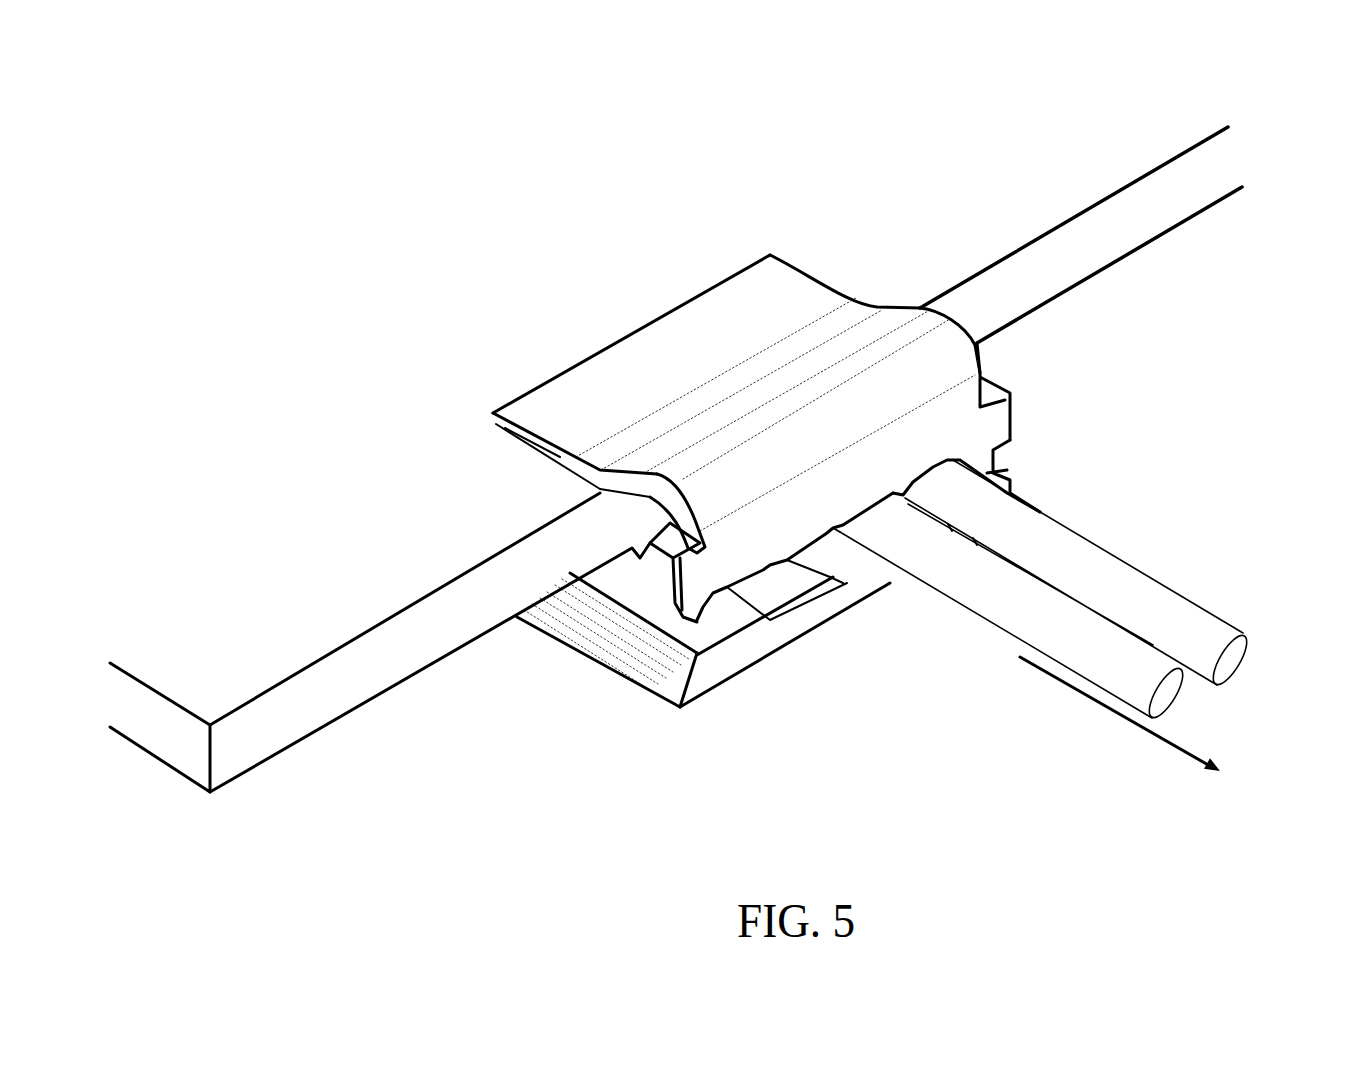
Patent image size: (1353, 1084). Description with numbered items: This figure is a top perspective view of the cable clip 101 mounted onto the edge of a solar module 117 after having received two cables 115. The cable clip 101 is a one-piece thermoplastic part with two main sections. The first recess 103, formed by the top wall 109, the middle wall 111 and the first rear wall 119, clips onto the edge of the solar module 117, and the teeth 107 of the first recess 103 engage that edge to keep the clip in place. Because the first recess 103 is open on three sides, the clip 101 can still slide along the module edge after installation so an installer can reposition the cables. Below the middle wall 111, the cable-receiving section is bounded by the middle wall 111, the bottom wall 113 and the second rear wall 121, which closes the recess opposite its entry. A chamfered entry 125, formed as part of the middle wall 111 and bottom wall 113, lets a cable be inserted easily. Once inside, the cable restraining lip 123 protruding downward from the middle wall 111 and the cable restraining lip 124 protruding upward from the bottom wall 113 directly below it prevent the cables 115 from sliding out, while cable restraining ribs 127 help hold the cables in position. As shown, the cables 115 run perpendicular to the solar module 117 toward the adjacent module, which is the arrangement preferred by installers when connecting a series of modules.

The cable clip 101 is at (631, 240).
The first recess 103 is at (622, 520).
The teeth 107 is at (530, 455).
The top wall 109 is at (751, 359).
The middle wall 111 is at (983, 420).
The bottom wall 113 is at (810, 622).
The cables 115 is at (1100, 662).
The solar module 117 is at (241, 692).
The first rear wall 119 is at (680, 507).
The second rear wall 121 is at (980, 470).
The cable restraining lip 123 is at (697, 622).
The cable restraining lip 124 is at (700, 662).
The chamfered entry 125 is at (620, 640).
The cable restraining ribs 127 is at (903, 493).